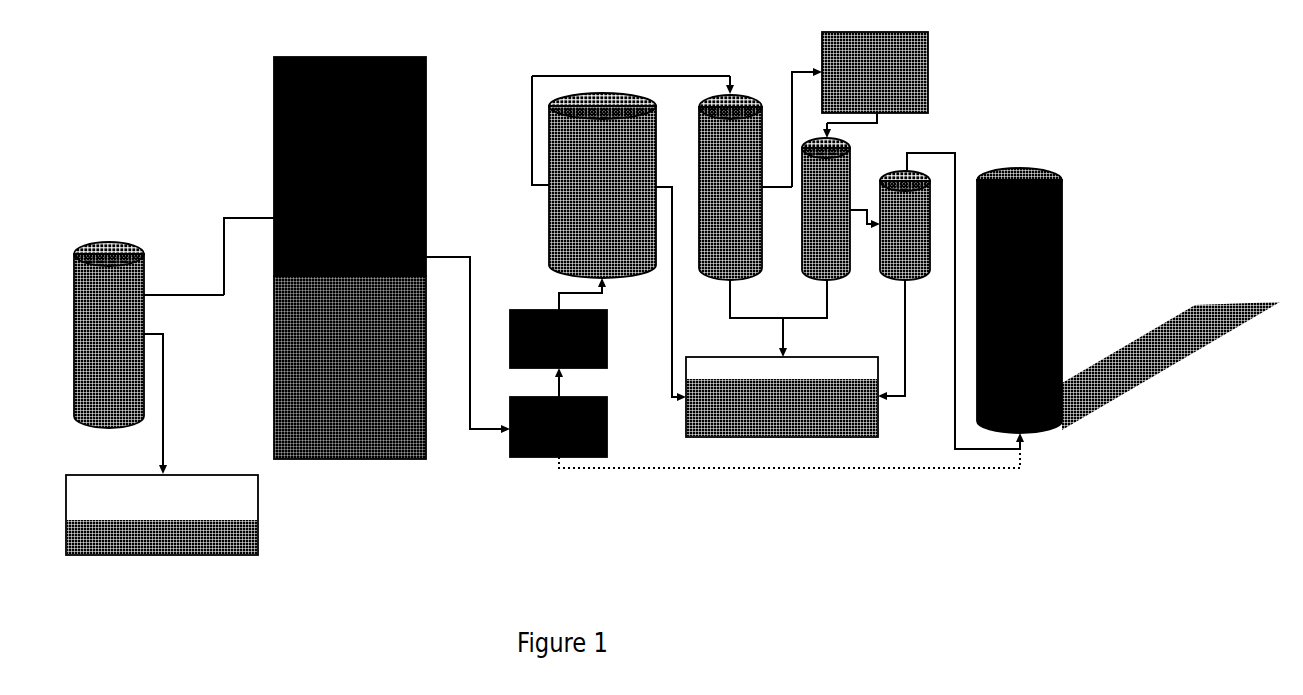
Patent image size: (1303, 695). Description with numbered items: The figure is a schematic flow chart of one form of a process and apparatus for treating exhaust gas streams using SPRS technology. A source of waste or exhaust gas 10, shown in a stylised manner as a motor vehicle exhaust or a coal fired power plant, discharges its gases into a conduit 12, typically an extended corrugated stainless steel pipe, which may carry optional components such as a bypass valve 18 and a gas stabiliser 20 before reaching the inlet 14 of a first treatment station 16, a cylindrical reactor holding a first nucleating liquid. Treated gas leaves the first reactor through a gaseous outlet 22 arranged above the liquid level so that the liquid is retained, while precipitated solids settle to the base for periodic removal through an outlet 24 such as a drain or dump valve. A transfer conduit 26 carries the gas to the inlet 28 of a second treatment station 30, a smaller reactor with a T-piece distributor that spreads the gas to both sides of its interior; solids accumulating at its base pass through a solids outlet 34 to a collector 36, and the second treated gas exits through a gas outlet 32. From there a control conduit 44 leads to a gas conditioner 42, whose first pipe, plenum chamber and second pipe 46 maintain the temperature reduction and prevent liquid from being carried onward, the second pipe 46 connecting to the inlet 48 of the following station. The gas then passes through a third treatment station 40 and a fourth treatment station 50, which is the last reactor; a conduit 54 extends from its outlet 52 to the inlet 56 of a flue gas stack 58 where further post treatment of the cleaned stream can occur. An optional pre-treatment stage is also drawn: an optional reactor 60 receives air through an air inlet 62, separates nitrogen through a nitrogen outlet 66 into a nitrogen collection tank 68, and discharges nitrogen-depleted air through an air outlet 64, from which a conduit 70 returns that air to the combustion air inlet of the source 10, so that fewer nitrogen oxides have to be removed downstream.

The source of waste or exhaust gas 10 is at (428, 70).
The conduit 12 is at (470, 277).
The inlet 14 is at (612, 282).
The first treatment station 16 is at (548, 238).
The bypass valve 18 is at (609, 428).
The gas stabiliser 20 is at (609, 347).
The gaseous outlet 22 is at (546, 186).
The outlet 24 is at (656, 185).
The transfer conduit 26 is at (600, 76).
The inlet 28 is at (733, 89).
The second treatment station 30 is at (699, 160).
The gas outlet 32 is at (760, 186).
The solids outlet 34 is at (740, 297).
The collector 36 is at (828, 357).
The third treatment station 40 is at (802, 243).
The gas conditioner 42 is at (791, 106).
The control conduit 44 is at (931, 63).
The second pipe 46 is at (879, 118).
The inlet 48 is at (825, 136).
The fourth treatment station 50 is at (884, 180).
The outlet 52 is at (910, 161).
The conduit 54 is at (957, 152).
The inlet 56 is at (1028, 440).
The flue gas stack 58 is at (1063, 293).
The optional reactor 60 is at (144, 278).
The air inlet 62 is at (117, 241).
The air outlet 64 is at (146, 294).
The nitrogen outlet 66 is at (146, 333).
The nitrogen collection tank 68 is at (190, 474).
The conduit 70 is at (221, 257).